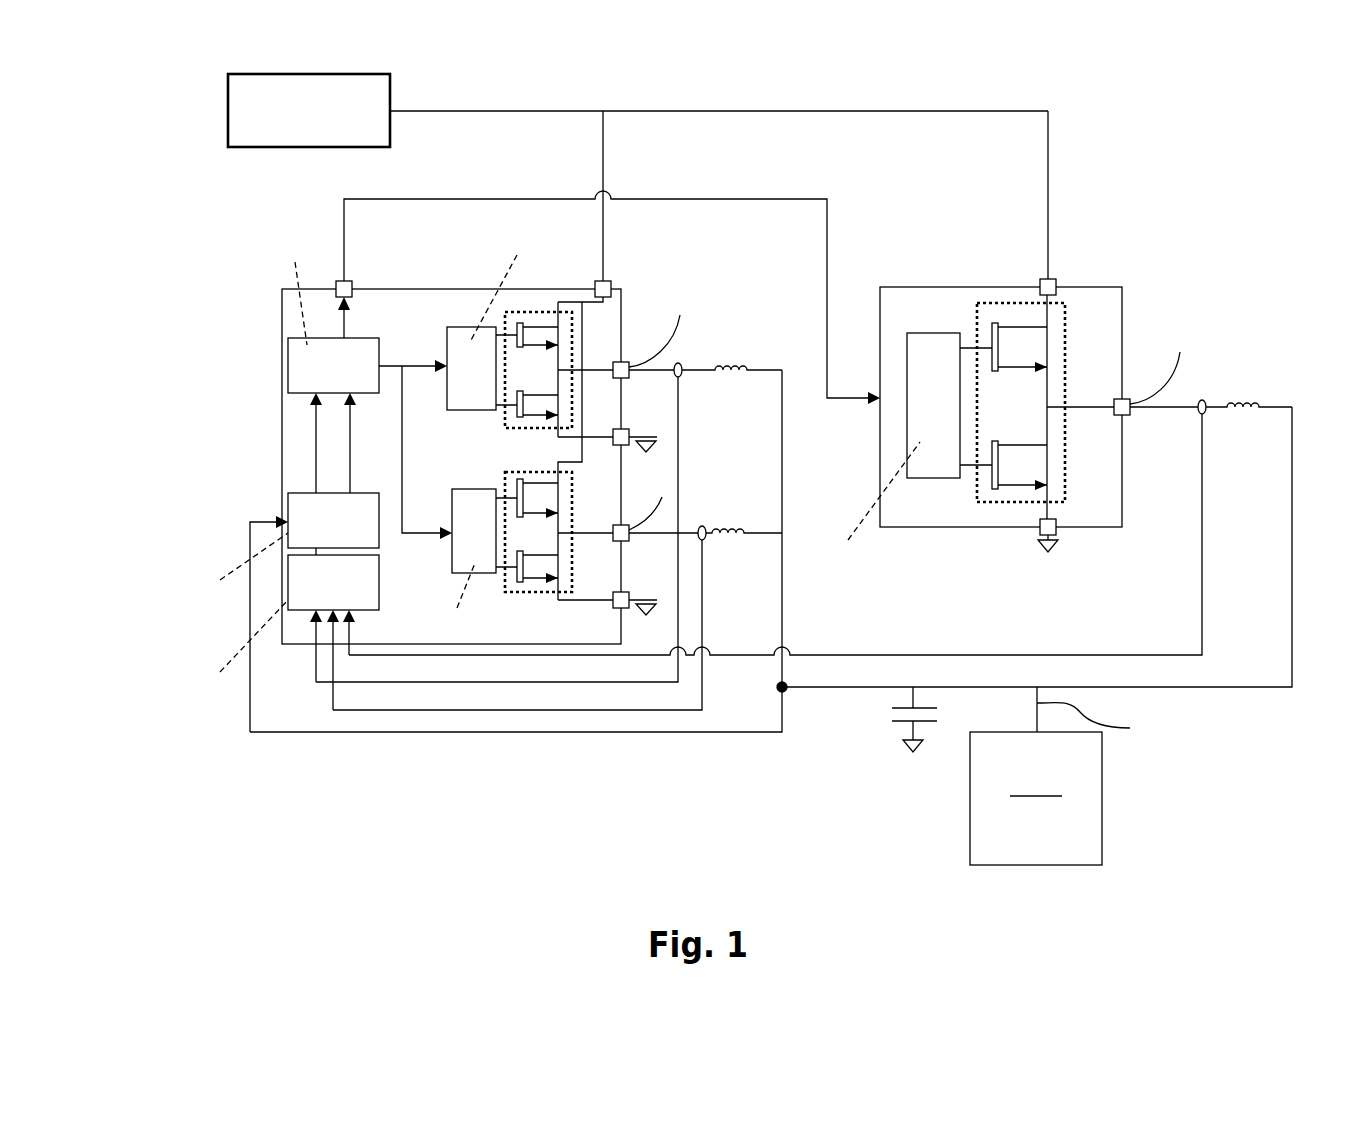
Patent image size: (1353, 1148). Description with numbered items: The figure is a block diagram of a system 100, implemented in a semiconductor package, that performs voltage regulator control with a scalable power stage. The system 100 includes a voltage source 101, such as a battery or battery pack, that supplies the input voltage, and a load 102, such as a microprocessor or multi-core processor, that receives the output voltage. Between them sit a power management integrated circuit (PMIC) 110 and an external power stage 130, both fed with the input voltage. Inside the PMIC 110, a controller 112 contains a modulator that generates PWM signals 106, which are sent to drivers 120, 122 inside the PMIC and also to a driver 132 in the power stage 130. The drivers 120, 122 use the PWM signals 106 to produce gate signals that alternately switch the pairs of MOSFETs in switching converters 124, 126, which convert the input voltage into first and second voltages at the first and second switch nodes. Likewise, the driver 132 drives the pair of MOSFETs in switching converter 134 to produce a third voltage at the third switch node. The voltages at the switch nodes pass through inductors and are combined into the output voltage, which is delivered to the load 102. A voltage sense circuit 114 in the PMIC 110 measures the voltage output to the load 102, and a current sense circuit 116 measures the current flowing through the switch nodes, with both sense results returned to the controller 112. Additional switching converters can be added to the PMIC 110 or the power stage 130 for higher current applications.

The system 100 is at (750, 66).
The voltage source 101 is at (309, 110).
The load 102 is at (1015, 831).
The PWM signals 106 is at (430, 199).
The power management integrated circuit (PMIC) 110 is at (420, 287).
The controller 112 is at (318, 378).
The voltage sense circuit 114 is at (318, 534).
The current sense circuit 116 is at (318, 596).
The driver 120 is at (456, 382).
The driver 122 is at (459, 544).
The switching converter 124 is at (505, 419).
The switching converter 126 is at (527, 593).
The power stage 130 is at (940, 287).
The driver 132 is at (919, 419).
The switching converter 134 is at (990, 503).